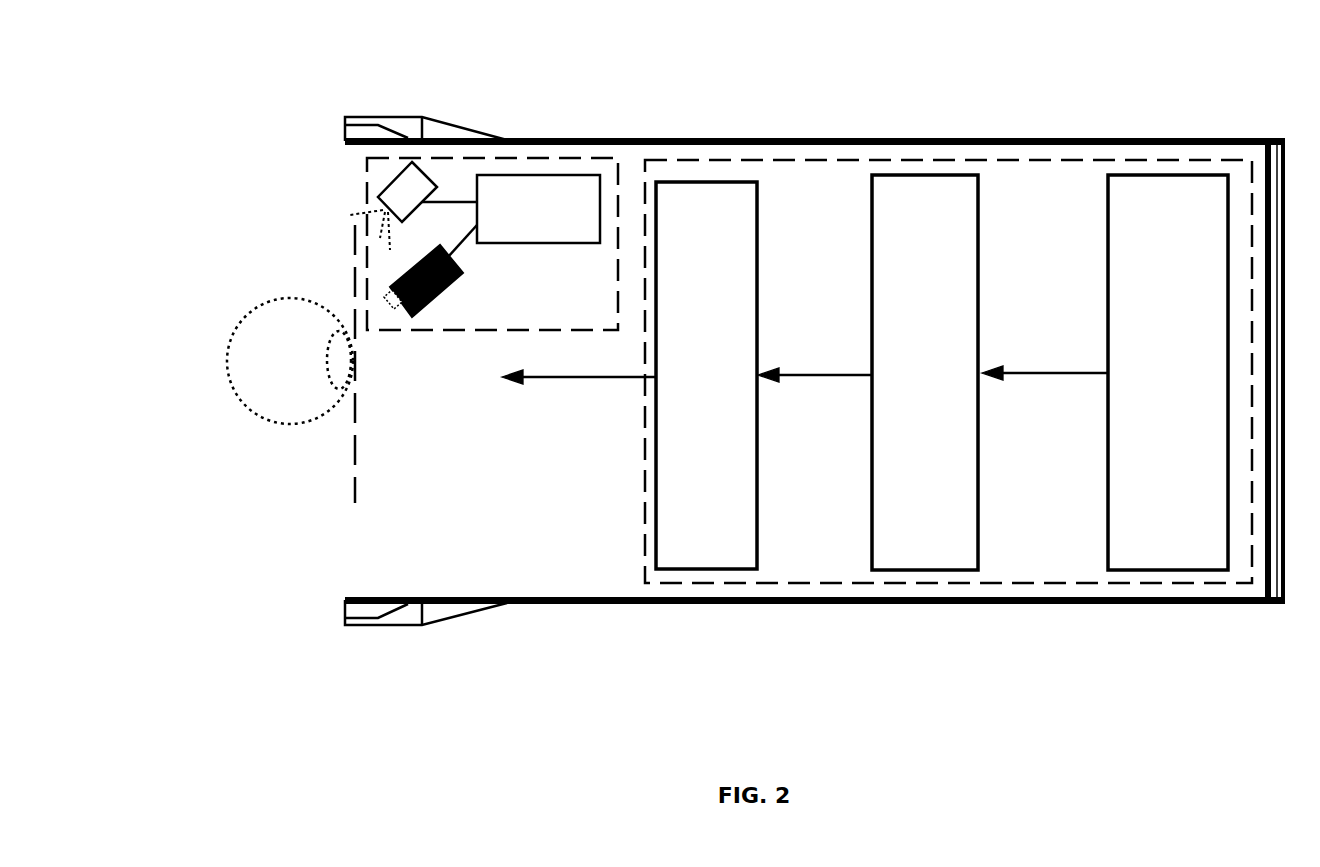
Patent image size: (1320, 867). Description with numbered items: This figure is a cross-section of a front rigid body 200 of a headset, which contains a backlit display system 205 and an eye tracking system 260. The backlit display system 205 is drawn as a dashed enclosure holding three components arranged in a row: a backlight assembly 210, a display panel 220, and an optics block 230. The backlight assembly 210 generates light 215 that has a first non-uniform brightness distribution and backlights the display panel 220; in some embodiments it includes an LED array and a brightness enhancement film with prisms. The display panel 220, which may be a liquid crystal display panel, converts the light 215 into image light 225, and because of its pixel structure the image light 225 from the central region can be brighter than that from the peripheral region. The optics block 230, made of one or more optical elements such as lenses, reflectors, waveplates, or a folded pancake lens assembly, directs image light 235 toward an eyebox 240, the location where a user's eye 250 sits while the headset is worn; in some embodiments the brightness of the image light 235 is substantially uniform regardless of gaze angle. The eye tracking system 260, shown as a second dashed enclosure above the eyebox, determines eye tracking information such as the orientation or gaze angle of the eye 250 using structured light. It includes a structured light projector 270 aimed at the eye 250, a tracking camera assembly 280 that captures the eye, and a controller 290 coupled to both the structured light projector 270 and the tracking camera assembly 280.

The front rigid body 200 is at (823, 137).
The backlit display system 205 is at (1162, 585).
The backlight assembly 210 is at (1168, 372).
The light 215 is at (1045, 403).
The display panel 220 is at (925, 372).
The image light 225 is at (815, 420).
The optics block 230 is at (706, 375).
The image light 235 is at (579, 416).
The eyebox 240 is at (353, 440).
The eye 250 is at (290, 361).
The eye tracking system 260 is at (520, 157).
The structured light projector 270 is at (390, 183).
The tracking camera assembly 280 is at (400, 278).
The controller 290 is at (511, 216).